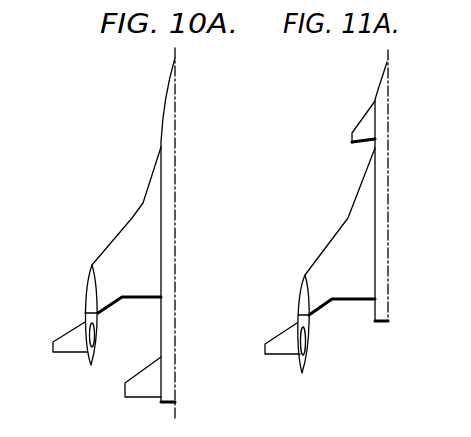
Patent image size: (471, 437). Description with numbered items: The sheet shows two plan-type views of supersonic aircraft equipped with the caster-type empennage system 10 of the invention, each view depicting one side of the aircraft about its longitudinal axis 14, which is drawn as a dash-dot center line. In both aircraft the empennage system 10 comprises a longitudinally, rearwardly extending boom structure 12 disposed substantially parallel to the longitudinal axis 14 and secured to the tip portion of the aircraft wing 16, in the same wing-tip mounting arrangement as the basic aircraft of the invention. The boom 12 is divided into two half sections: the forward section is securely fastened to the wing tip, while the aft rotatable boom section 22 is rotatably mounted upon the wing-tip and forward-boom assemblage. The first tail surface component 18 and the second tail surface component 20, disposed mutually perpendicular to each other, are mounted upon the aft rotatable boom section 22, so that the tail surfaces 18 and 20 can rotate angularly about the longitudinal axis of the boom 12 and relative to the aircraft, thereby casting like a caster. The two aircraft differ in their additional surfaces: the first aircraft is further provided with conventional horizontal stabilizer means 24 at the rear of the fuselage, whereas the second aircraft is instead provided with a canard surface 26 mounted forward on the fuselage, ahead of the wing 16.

In FIG. 10A, the empennage system 10 is at (75, 276).
In FIG. 11A, the empennage system 10 is at (305, 246).
In FIG. 10A, the boom structure 12 is at (87, 300).
In FIG. 11A, the boom structure 12 is at (300, 283).
In FIG. 10A, the longitudinal axis 14 is at (177, 232).
In FIG. 11A, the longitudinal axis 14 is at (386, 331).
In FIG. 10A, the aircraft wing 16 is at (128, 238).
In FIG. 11A, the aircraft wing 16 is at (350, 233).
In FIG. 10A, the first tail surface component 18 is at (63, 352).
In FIG. 11A, the first tail surface component 18 is at (290, 332).
In FIG. 10A, the second tail surface component 20 is at (97, 338).
In FIG. 11A, the second tail surface component 20 is at (307, 343).
In FIG. 10A, the aft rotatable boom section 22 is at (96, 356).
In FIG. 11A, the aft rotatable boom section 22 is at (307, 360).
In FIG. 10A, the horizontal stabilizer means 24 is at (125, 397).
In FIG. 11A, the canard surface 26 is at (365, 122).